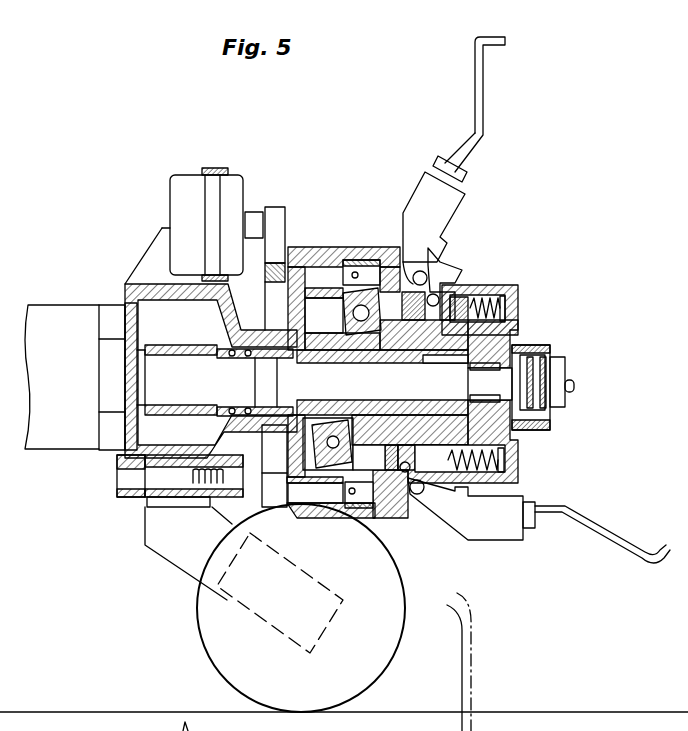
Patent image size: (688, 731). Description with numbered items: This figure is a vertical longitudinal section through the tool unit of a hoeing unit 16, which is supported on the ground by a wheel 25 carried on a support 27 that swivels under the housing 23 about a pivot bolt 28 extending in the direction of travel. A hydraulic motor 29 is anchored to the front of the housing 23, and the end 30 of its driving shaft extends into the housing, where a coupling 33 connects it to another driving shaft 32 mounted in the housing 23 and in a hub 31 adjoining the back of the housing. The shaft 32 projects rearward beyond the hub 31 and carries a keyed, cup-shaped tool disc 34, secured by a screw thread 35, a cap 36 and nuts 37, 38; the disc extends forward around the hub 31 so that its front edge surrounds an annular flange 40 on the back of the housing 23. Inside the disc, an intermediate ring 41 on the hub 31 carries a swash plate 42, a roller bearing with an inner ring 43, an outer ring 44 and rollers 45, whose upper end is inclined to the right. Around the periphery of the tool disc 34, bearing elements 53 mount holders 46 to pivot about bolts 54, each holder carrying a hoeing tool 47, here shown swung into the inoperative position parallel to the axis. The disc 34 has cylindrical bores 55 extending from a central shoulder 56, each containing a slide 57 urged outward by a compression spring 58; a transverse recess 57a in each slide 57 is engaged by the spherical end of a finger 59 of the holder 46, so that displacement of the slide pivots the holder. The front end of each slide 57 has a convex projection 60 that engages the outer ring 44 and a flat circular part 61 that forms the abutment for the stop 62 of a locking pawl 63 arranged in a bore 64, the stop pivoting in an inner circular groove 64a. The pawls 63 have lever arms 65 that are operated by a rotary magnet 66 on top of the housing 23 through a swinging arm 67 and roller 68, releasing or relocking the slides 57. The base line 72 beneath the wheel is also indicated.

The hoeing unit 16 is at (116, 235).
The housing 23 is at (125, 292).
The wheel 25 is at (385, 635).
The support 27 is at (152, 532).
The pivot bolt 28 is at (118, 478).
The hydraulic motor 29 is at (63, 313).
The end of the driving shaft 30 is at (150, 390).
The hub 31 is at (372, 405).
The driving shaft 32 is at (520, 430).
The coupling 33 is at (222, 398).
The tool disc 34 is at (521, 313).
The screw thread 35 is at (545, 400).
The cap 36 is at (545, 345).
The nut 37 is at (570, 385).
The nut 38 is at (560, 352).
The annular flange 40 is at (268, 300).
The intermediate ring 41 is at (336, 326).
The swash plate 42 is at (343, 247).
The inner ring 43 is at (322, 410).
The outer ring 44 is at (312, 453).
The rollers 45 is at (407, 442).
The holder 46 is at (430, 178).
The hoeing tool 47 is at (470, 101).
The bearing element 53 is at (450, 270).
The bolt 54 is at (422, 270).
The cylindrical bore 55 is at (503, 283).
The central shoulder 56 is at (336, 405).
The slide 57 is at (397, 440).
The transverse recess 57a is at (410, 455).
The compression spring 58 is at (498, 308).
The finger 59 is at (455, 285).
The convex projection 60 is at (330, 512).
The flat circular part 61 is at (348, 510).
The stop 62 is at (392, 265).
The locking pawl 63 is at (358, 262).
The bore 64 is at (300, 250).
The inner circular groove 64a is at (367, 510).
The lever arm 65 is at (281, 263).
The rotary magnet 66 is at (190, 185).
The swinging arm 67 is at (254, 215).
The roller 68 is at (276, 210).
The base 72 is at (148, 722).